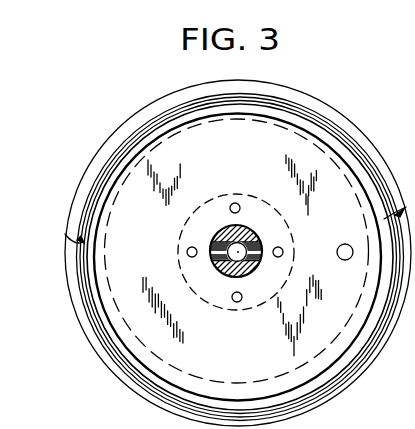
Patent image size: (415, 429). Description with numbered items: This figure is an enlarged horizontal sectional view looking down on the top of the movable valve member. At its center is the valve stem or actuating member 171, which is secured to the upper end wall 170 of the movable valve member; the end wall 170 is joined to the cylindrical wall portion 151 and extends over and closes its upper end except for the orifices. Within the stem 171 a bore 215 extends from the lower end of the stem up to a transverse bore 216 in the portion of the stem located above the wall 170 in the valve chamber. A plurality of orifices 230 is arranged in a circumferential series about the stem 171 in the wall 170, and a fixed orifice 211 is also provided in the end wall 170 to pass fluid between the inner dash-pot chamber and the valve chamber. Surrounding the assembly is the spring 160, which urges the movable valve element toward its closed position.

The spring 160 is at (112, 140).
The upper end wall 170 is at (303, 156).
The orifices 230 is at (236, 203).
The transverse bore 216 is at (228, 250).
The orifice 211 is at (338, 245).
The valve stem 171 is at (226, 280).
The bore 215 is at (243, 258).
The cylindrical wall portion 151 is at (111, 292).